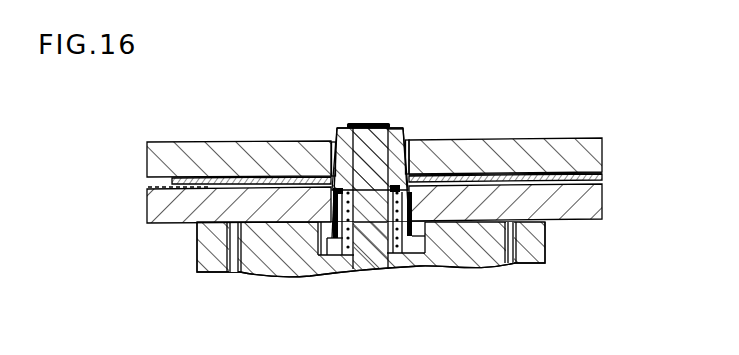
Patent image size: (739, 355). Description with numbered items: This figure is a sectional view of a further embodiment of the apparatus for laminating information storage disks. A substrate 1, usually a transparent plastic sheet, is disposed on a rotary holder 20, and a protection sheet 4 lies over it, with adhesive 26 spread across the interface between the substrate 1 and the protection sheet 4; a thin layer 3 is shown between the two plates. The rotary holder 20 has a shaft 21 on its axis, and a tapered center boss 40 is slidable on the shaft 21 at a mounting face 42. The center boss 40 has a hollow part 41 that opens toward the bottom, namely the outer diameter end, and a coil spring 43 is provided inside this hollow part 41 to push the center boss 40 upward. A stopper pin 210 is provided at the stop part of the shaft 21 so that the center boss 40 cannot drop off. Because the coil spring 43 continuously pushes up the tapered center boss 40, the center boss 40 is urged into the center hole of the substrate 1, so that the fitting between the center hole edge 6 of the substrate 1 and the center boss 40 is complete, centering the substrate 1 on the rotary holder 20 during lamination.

The substrate 1 is at (588, 213).
The intermediate sheet 3 is at (605, 178).
The protection sheet 4 is at (583, 146).
The center hole edge 6 is at (333, 196).
The rotary holder 20 is at (490, 255).
The shaft 21 is at (368, 127).
The adhesive 26 is at (485, 176).
The center boss 40 is at (403, 127).
The hollow part 41 is at (346, 248).
The mounting face 42 is at (343, 127).
The coil spring 43 is at (399, 240).
The stopper pin 210 is at (393, 127).